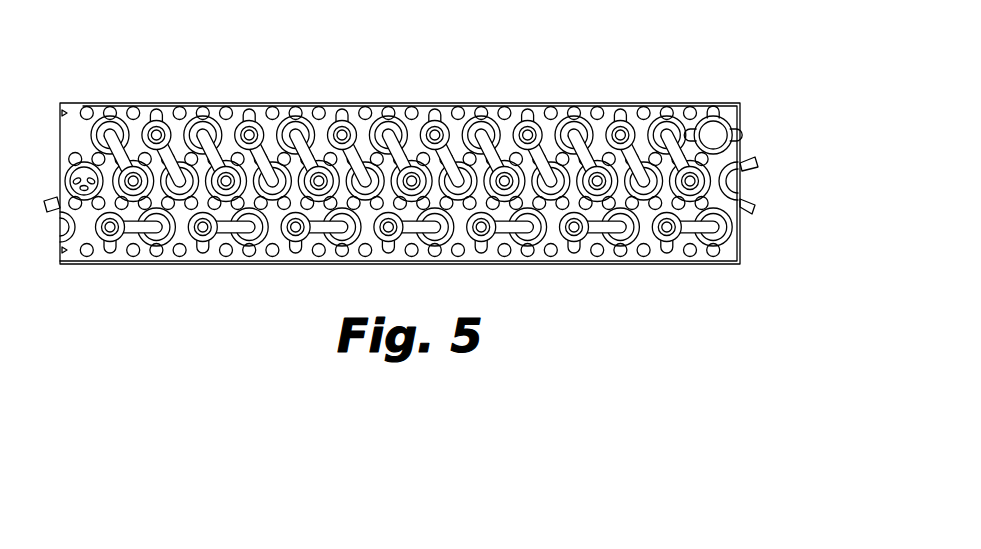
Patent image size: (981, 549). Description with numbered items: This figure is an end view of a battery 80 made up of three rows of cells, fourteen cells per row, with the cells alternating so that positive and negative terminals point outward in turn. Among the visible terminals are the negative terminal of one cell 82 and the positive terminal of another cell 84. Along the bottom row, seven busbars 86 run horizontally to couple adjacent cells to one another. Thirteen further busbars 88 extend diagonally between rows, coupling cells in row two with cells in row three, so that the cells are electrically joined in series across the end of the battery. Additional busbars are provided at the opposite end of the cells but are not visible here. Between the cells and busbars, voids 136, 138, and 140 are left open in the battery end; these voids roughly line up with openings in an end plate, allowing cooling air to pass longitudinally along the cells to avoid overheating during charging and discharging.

The battery 80 is at (572, 58).
The cell 82 is at (90, 246).
The cell 84 is at (178, 248).
The busbar 86 is at (142, 241).
The busbar 88 is at (148, 130).
The void 136 is at (598, 250).
The void 138 is at (641, 240).
The void 140 is at (573, 200).